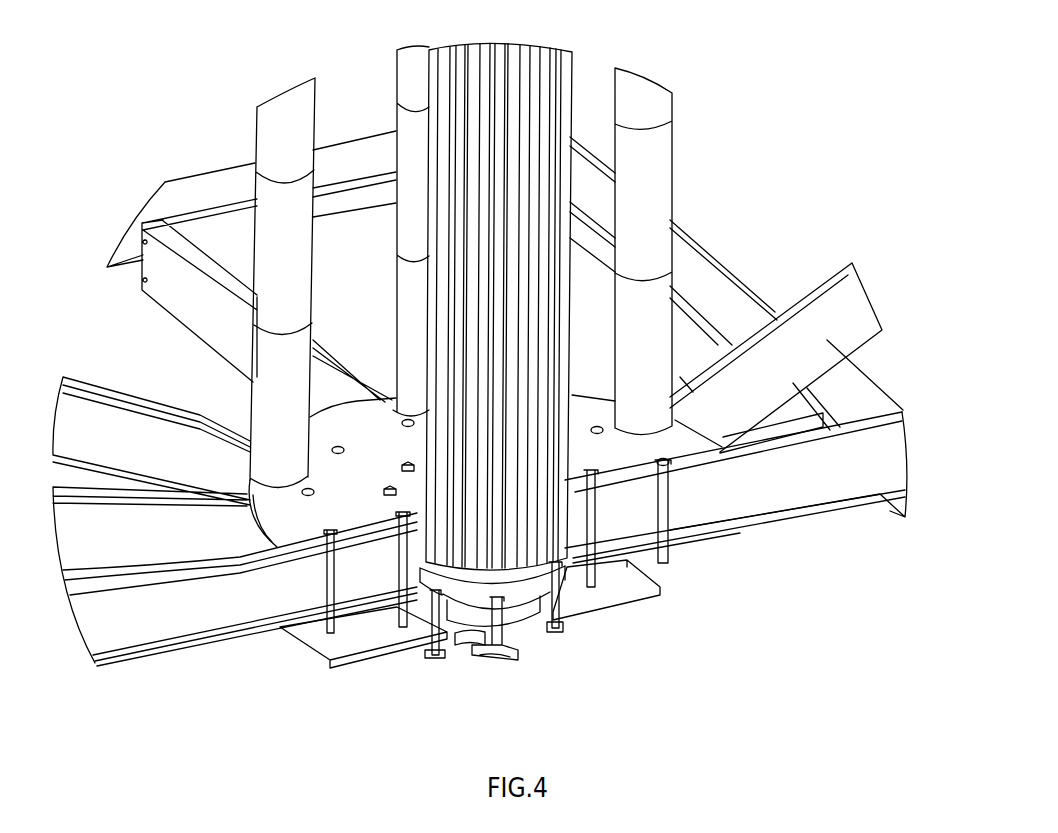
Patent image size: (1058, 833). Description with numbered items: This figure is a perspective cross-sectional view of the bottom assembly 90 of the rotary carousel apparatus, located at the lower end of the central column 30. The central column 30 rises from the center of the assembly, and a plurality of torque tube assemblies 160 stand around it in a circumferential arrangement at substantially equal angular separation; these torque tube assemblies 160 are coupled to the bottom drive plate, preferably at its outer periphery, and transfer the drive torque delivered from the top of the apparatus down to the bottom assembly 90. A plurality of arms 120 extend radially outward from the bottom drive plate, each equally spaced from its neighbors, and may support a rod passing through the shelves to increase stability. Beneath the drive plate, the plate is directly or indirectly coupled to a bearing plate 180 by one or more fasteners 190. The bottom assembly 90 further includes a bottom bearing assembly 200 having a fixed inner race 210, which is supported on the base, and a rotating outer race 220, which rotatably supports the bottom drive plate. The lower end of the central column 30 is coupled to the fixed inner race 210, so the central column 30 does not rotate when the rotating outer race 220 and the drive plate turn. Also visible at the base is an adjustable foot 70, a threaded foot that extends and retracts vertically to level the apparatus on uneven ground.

The central column 30 is at (512, 68).
The torque tube assembly 160 is at (275, 118).
The arms 120 is at (832, 285).
The bearing plate 180 is at (637, 587).
The fasteners 190 is at (555, 628).
The bottom bearing assembly 200 is at (530, 593).
The fixed inner race 210 is at (463, 633).
The rotating outer race 220 is at (392, 607).
The adjustable foot 70 is at (497, 650).
The bottom assembly 90 is at (360, 757).